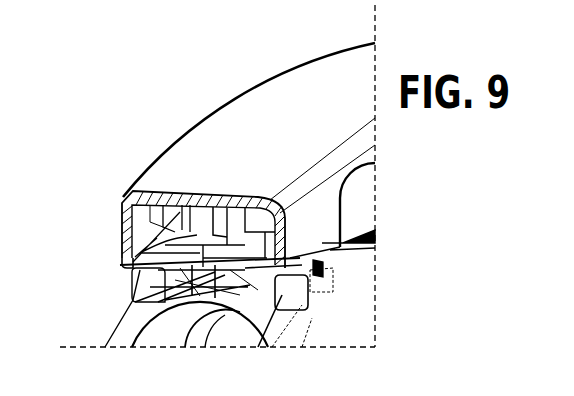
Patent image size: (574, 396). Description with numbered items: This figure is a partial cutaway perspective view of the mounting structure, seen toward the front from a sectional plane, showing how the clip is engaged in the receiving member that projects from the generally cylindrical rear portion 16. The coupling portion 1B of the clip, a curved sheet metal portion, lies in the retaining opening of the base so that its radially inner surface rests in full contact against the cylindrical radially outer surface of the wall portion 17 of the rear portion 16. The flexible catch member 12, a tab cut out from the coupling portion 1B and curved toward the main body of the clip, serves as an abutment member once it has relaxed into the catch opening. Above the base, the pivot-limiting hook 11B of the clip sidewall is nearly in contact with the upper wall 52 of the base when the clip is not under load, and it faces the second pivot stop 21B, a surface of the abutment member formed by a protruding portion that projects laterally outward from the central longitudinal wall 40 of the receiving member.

The pivot-limiting hook 11B is at (124, 225).
The flexible catch member 12 is at (195, 228).
The second pivot stop 21B is at (170, 222).
The central longitudinal wall 40 is at (213, 235).
The upper wall 52 is at (124, 258).
The coupling portion 1B is at (160, 283).
The wall portion 17 is at (320, 268).
The generally cylindrical rear portion 16 is at (125, 327).